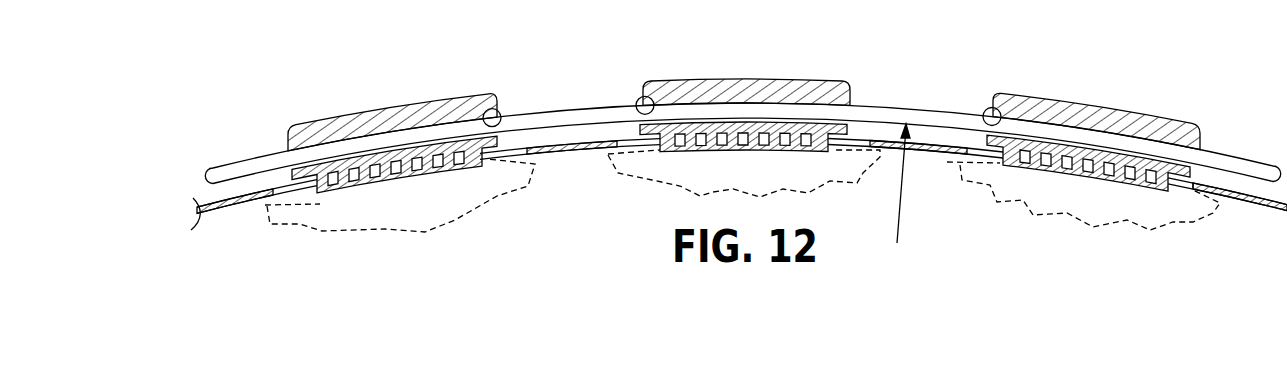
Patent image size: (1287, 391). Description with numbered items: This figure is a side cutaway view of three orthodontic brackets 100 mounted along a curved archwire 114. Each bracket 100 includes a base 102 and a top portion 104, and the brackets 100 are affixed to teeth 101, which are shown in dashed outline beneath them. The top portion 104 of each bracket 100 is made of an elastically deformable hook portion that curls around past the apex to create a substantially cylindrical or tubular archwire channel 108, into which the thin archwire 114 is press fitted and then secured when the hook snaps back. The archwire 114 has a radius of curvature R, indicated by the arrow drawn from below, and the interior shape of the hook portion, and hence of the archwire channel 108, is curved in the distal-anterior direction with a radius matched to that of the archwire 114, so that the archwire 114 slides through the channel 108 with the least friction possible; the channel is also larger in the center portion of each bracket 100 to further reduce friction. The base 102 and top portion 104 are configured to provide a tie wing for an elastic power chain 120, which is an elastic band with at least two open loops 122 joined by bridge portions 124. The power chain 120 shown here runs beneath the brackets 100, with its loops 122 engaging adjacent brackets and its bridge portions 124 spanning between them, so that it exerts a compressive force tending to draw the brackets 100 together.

The bracket 100 is at (740, 106).
The teeth 101 is at (437, 218).
The base 102 is at (389, 177).
The top portion 104 is at (393, 96).
The archwire channel 108 is at (496, 109).
The archwire 114 is at (925, 107).
The elastic power chain 120 is at (232, 208).
The open loops 122 is at (504, 154).
The bridge portions 124 is at (575, 149).